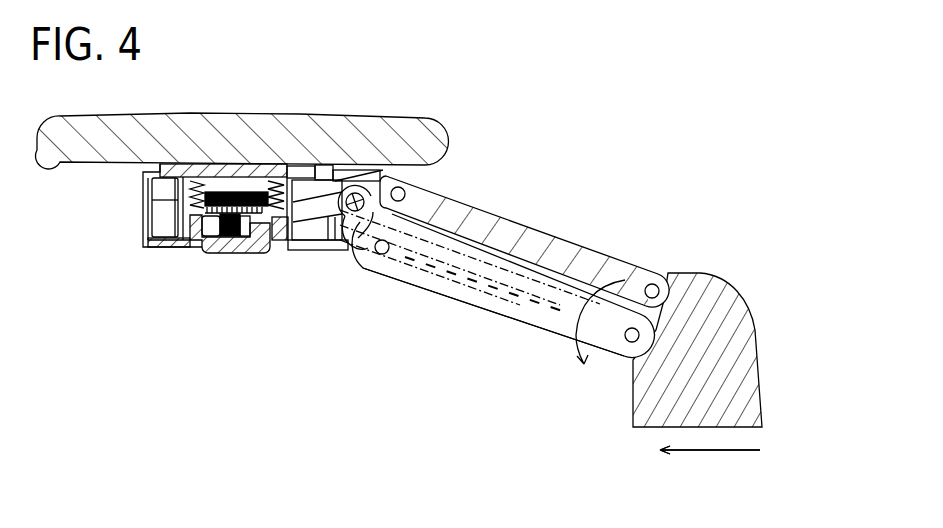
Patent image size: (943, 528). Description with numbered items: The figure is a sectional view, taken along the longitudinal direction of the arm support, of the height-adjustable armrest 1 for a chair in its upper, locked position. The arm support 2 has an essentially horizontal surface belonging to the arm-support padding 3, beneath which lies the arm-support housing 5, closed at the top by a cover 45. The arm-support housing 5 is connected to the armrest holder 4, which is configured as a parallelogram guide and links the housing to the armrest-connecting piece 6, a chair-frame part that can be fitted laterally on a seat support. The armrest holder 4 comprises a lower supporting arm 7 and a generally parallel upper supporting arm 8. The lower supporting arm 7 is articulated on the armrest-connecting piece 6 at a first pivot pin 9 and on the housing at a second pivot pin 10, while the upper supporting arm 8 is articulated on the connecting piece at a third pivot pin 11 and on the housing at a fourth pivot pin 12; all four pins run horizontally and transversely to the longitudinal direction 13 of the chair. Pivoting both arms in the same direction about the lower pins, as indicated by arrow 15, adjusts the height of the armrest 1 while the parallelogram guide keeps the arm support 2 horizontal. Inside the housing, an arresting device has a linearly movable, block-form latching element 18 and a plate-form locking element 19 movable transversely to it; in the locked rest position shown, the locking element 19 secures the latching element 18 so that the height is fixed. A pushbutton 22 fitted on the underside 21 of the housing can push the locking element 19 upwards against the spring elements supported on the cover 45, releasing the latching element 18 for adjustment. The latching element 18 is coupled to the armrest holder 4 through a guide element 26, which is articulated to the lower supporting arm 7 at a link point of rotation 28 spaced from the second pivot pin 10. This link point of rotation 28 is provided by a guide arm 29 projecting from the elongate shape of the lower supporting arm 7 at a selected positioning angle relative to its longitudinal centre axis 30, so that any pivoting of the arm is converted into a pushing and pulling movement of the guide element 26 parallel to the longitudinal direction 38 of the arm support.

The height-adjustable armrest 1 is at (535, 157).
The arm support 2 is at (465, 128).
The arm-support padding 3 is at (278, 116).
The armrest holder 4 is at (409, 347).
The arm-support housing 5 is at (145, 222).
The armrest-connecting piece 6 is at (753, 352).
The lower supporting arm 7 is at (533, 323).
The upper supporting arm 8 is at (573, 255).
The first pivot pin 9 is at (628, 342).
The second pivot pin 10 is at (383, 255).
The third pivot pin 11 is at (650, 283).
The fourth pivot pin 12 is at (405, 192).
The longitudinal direction of the chair 13 is at (722, 452).
The pivoting direction arrow 15 is at (560, 357).
The latching element 18 is at (238, 257).
The locking element 19 is at (228, 195).
The underside of the armrest housing 21 is at (170, 247).
The pushbutton 22 is at (217, 248).
The guide element 26 is at (313, 207).
The link point of rotation 28 is at (357, 198).
The guide arm 29 is at (362, 240).
The longitudinal centre axis of the lower supporting arm 30 is at (473, 273).
The longitudinal direction of the arm support 38 is at (722, 452).
The cover of the armrest housing 45 is at (266, 180).